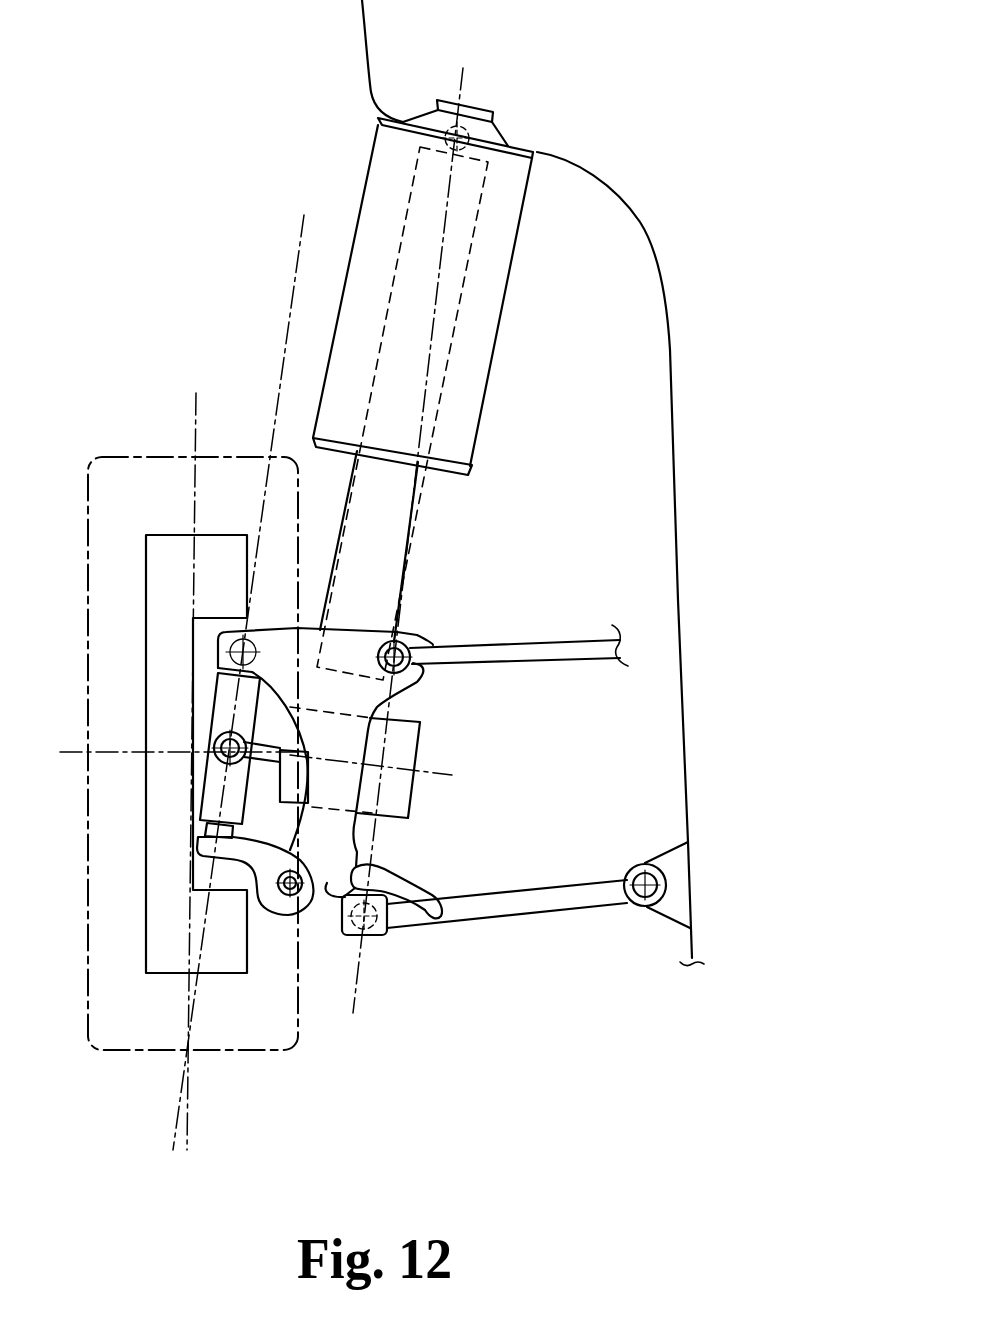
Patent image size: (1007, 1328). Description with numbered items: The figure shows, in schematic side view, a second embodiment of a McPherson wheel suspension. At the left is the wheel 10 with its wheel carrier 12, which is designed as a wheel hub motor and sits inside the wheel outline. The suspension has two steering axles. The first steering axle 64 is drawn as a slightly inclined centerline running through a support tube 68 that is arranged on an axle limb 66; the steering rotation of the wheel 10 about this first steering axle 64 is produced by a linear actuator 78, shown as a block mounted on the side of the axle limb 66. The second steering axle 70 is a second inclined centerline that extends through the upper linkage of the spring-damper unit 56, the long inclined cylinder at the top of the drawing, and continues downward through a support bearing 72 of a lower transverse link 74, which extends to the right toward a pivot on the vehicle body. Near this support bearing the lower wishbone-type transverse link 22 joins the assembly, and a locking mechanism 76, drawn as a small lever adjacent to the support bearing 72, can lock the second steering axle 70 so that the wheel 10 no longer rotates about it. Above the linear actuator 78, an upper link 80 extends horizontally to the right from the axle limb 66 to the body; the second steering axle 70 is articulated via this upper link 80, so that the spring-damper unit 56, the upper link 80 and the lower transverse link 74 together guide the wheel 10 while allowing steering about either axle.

The wheel 10 is at (117, 457).
The wheel carrier 12 is at (163, 589).
The lower wishbone/triangular transverse link 22 is at (380, 932).
The spring-damper unit 56 is at (505, 214).
The first steering axle 64 is at (300, 242).
The axle limb 66 is at (327, 886).
The support tube 68 is at (212, 698).
The second steering axle 70 is at (463, 76).
The support bearing 72 is at (347, 897).
The lower transverse link 74 is at (540, 902).
The locking mechanism 76 is at (420, 887).
The linear actuator 78 is at (407, 733).
The upper link 80 is at (532, 643).